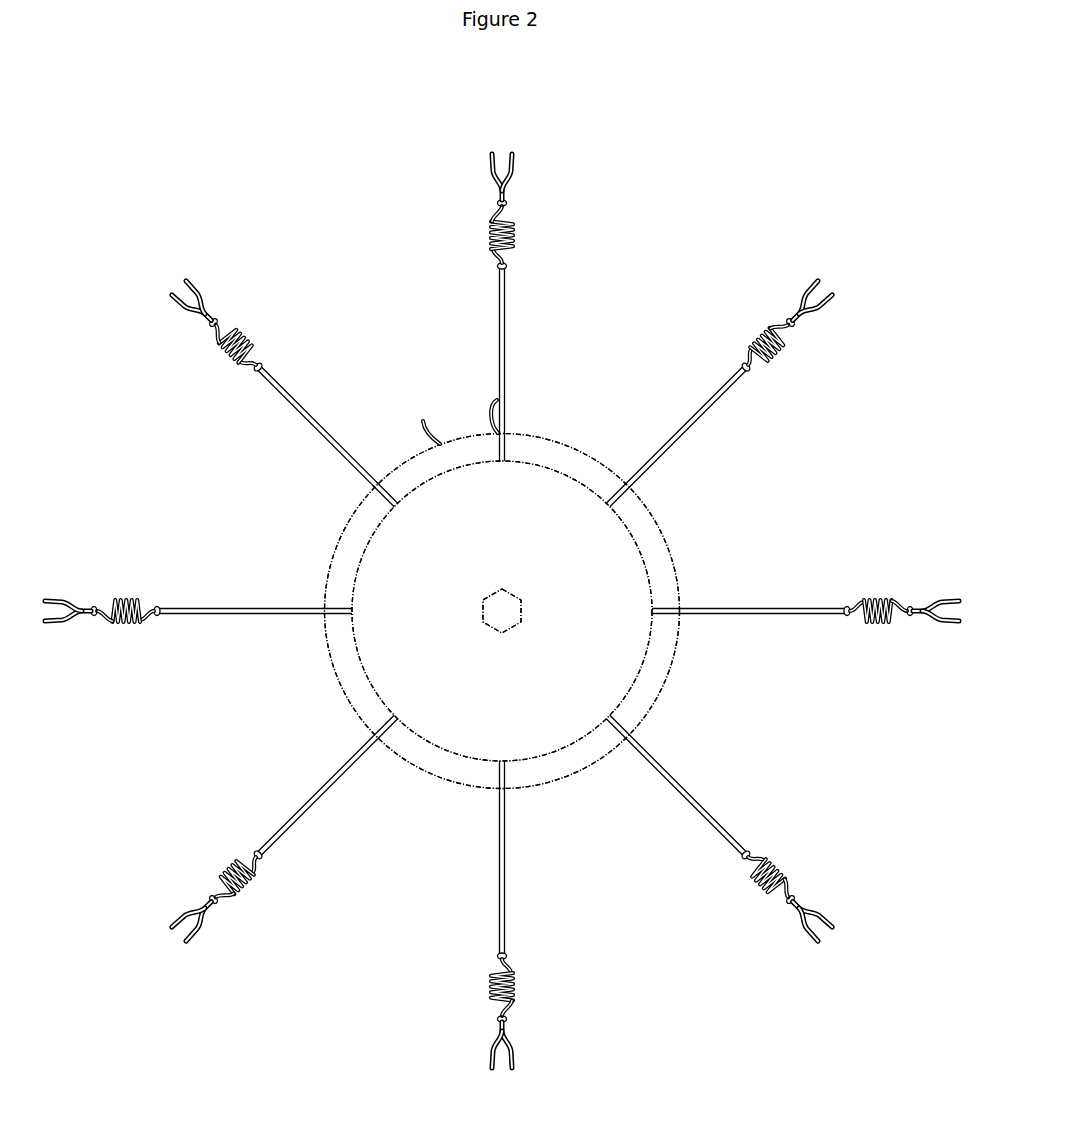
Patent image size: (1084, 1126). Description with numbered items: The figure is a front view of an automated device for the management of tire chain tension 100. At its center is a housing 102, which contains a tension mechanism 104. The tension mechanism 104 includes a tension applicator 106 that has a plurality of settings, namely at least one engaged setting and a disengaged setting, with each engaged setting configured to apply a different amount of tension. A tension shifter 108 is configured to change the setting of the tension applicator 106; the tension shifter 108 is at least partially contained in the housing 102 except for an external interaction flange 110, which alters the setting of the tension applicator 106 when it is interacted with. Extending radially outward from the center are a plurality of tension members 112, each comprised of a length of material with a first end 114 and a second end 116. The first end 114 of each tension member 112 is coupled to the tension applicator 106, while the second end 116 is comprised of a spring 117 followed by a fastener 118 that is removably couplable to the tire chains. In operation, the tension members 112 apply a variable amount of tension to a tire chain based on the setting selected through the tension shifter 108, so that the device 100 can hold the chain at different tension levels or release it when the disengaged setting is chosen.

The device for the management of tire chain tension 100 is at (591, 422).
The housing 102 is at (377, 649).
The tension mechanism 104 is at (646, 715).
The tension applicator 106 is at (606, 567).
The tension shifter 108 is at (490, 619).
The external interaction flange 110 is at (507, 617).
The tension members 112 is at (338, 450).
The first end 114 is at (383, 493).
The second end 116 is at (257, 368).
The spring 117 is at (243, 336).
The fastener 118 is at (197, 309).